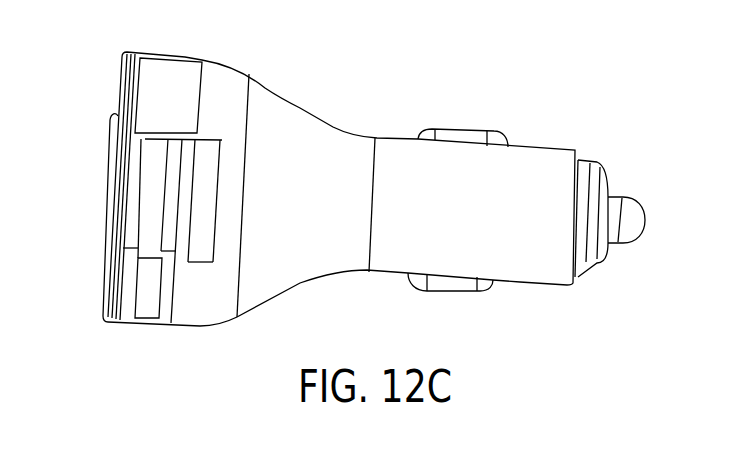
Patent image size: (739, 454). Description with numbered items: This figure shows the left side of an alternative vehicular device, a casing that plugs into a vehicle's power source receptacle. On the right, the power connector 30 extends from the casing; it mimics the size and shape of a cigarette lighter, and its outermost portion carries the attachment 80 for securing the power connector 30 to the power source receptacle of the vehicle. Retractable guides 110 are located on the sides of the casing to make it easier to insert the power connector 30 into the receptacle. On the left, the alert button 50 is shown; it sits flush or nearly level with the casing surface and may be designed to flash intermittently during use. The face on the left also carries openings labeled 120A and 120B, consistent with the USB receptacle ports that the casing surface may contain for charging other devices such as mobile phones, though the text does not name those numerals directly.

The alert button 50 is at (203, 186).
The first USB charging port 120A is at (117, 144).
The second USB charging port 120B is at (153, 202).
The retractable guides 110 is at (467, 137).
The attachment 80 is at (635, 213).
The power connector 30 is at (535, 263).